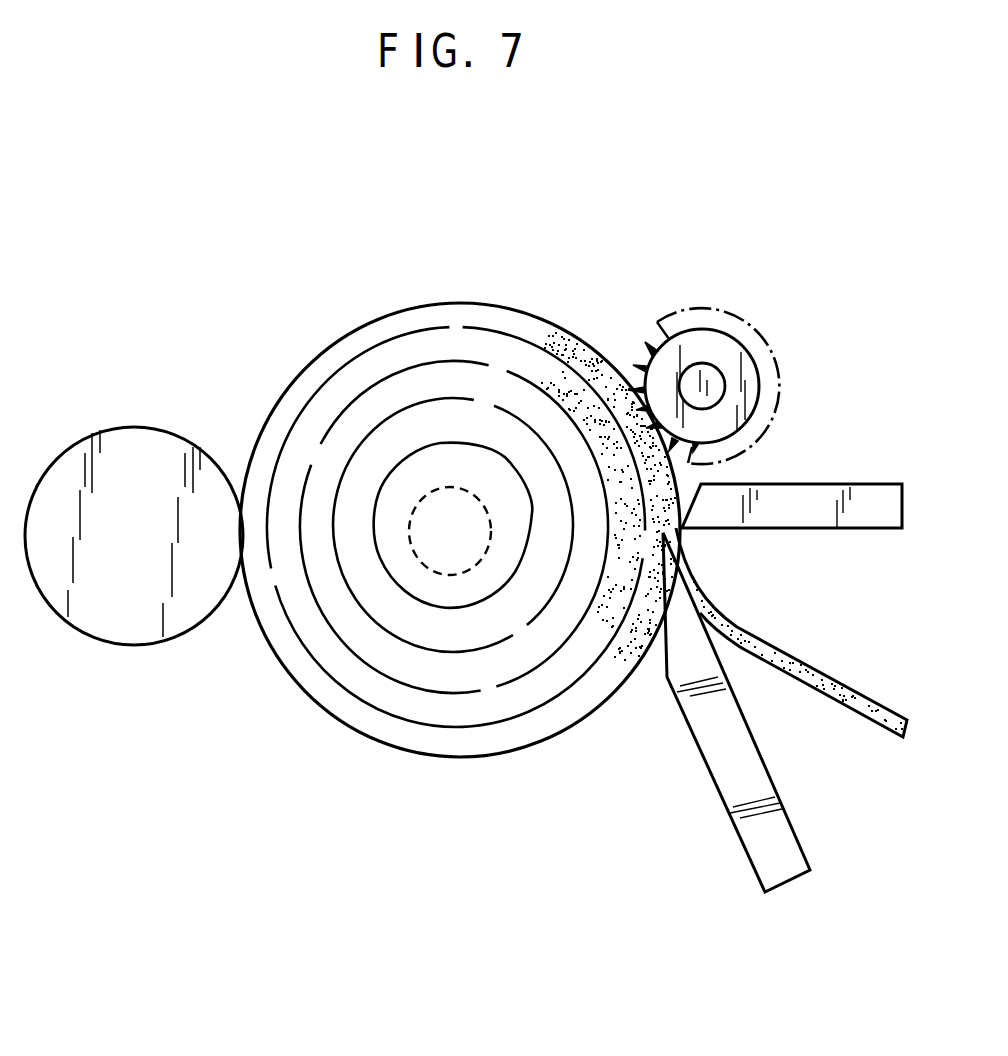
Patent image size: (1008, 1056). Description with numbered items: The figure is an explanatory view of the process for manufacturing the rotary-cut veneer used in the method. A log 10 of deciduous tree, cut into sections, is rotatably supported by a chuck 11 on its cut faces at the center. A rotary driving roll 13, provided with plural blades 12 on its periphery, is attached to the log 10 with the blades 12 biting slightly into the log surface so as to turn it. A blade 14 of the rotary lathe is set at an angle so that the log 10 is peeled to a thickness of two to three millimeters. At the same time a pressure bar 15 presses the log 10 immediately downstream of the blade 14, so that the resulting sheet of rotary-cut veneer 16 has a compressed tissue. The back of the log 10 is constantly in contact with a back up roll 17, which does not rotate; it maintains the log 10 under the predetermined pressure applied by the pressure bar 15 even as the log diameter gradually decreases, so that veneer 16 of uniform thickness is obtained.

The log 10 is at (417, 310).
The chuck 11 is at (401, 630).
The blades 12 is at (643, 366).
The rotary driving roll 13 is at (733, 347).
The blade 14 is at (767, 827).
The pressure bar 15 is at (803, 500).
The rotary-cut veneer 16 is at (840, 687).
The back up roll 17 is at (130, 637).